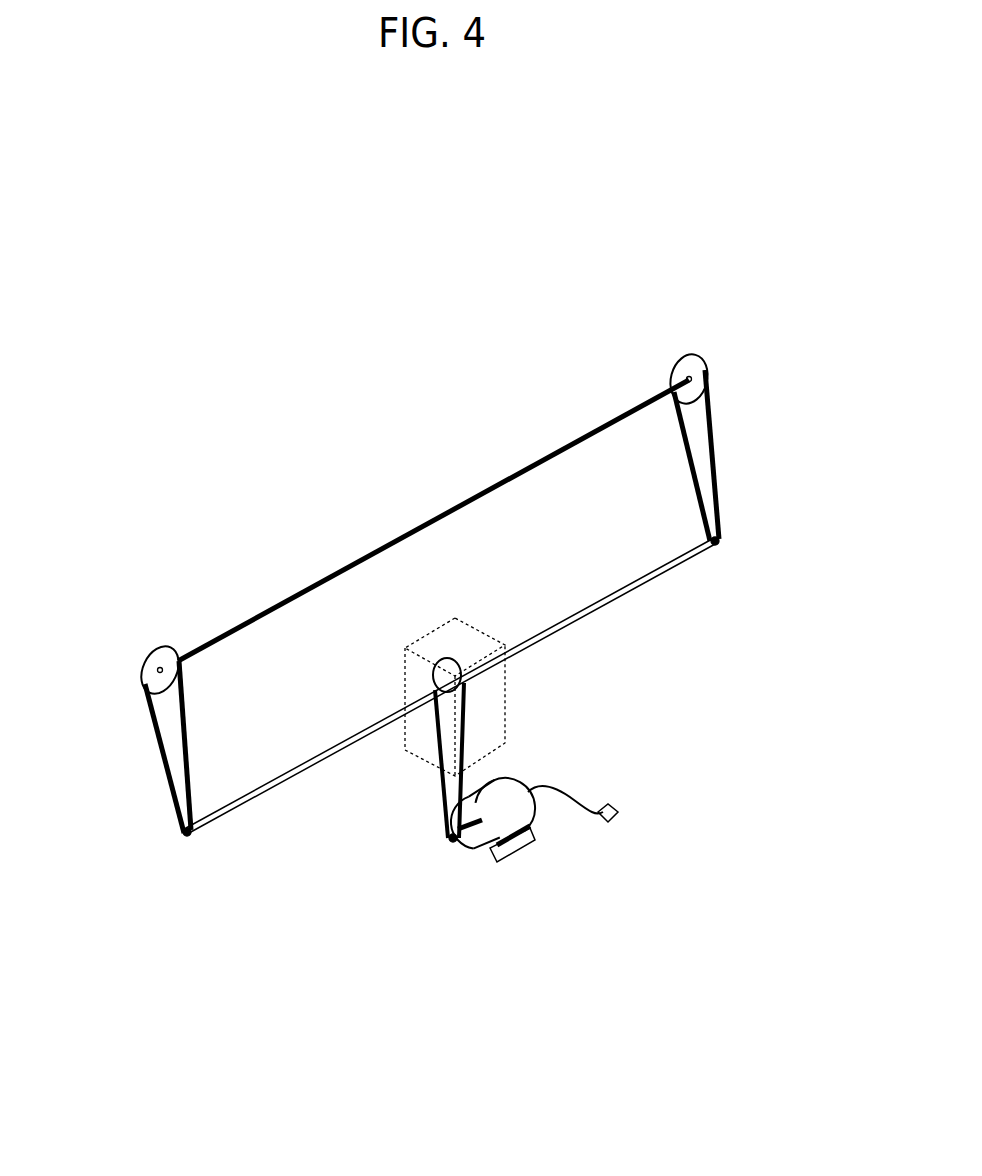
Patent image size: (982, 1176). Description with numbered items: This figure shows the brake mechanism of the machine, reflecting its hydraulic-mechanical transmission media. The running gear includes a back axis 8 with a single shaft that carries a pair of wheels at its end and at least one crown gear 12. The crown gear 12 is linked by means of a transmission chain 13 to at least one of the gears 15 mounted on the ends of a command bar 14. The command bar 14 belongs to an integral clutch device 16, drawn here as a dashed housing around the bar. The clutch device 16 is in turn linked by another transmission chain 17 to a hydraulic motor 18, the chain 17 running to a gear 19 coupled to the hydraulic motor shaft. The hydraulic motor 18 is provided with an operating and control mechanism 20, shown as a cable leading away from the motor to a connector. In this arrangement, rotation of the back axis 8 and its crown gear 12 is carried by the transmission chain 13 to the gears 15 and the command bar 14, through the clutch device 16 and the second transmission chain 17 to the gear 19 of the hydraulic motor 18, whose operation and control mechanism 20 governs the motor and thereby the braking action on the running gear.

The back axis with a running gear 8 is at (418, 527).
The crown gear 12 is at (150, 648).
The transmission chain 13 is at (163, 746).
The command bar 14 is at (269, 788).
The gears mounted on the ends of the command bar 15 is at (183, 838).
The clutch device 16 is at (497, 700).
The transmission chain 17 is at (445, 792).
The hydraulic motor 18 is at (512, 822).
The gear coupled to the hydraulic motor shaft 19 is at (451, 840).
The operating and control mechanism of the hydraulic motor 20 is at (617, 811).